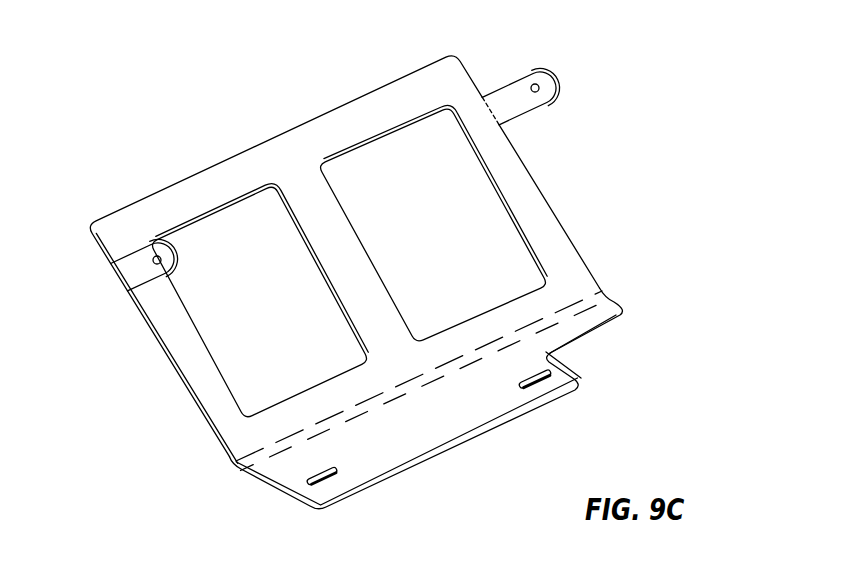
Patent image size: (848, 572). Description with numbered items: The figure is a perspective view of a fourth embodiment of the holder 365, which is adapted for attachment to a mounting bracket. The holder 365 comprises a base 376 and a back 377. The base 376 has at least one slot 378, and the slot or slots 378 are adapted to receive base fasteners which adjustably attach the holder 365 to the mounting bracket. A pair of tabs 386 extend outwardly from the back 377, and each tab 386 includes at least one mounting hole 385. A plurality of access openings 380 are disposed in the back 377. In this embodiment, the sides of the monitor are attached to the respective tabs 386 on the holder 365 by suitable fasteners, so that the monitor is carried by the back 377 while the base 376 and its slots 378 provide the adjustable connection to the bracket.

The holder 365 is at (626, 165).
The base 376 is at (448, 430).
The back 377 is at (274, 146).
The slot 378 is at (551, 382).
The access openings 380 is at (216, 213).
The mounting hole 385 is at (533, 81).
The tab 386 is at (556, 81).